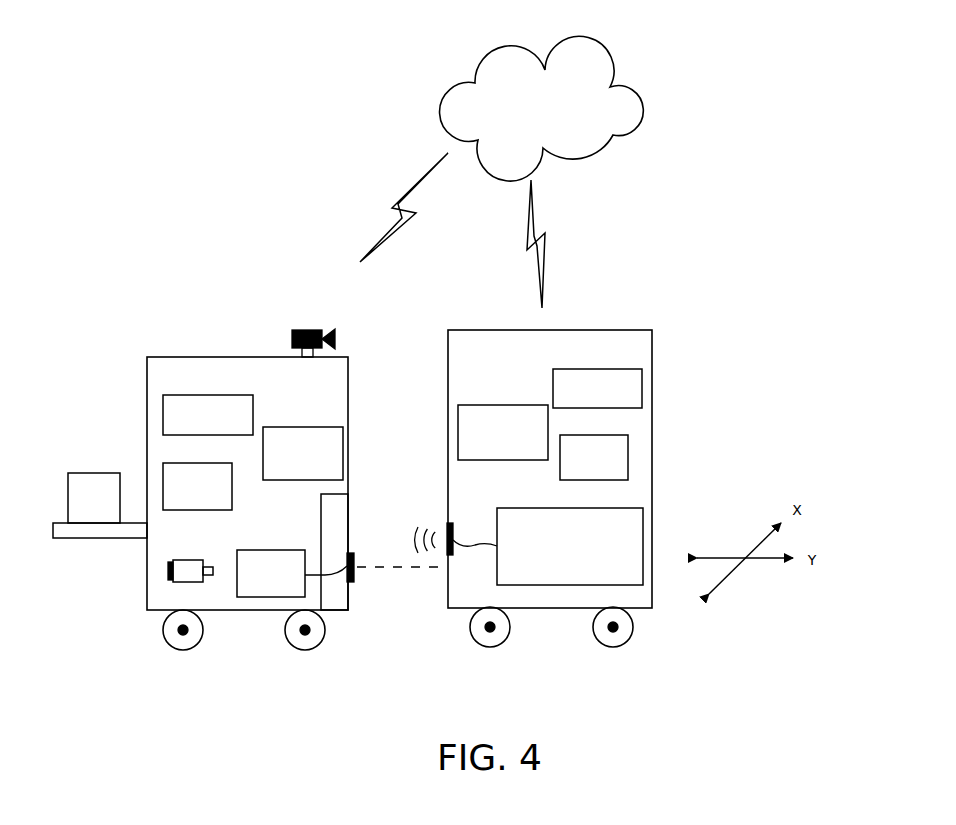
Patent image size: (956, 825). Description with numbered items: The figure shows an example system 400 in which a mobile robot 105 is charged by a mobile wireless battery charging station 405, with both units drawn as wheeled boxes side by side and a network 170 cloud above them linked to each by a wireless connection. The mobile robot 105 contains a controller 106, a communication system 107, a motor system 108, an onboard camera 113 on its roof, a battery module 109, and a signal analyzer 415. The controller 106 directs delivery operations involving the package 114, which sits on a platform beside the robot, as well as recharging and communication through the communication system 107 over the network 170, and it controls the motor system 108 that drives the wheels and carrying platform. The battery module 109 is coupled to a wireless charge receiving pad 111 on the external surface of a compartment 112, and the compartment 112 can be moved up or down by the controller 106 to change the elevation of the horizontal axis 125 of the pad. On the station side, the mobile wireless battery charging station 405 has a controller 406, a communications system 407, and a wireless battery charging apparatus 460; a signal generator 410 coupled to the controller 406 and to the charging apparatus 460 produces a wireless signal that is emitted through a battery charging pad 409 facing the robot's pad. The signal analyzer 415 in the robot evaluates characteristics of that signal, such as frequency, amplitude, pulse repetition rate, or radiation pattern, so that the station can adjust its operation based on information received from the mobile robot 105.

The system 400 is at (748, 663).
The mobile robot 105 is at (132, 330).
The controller 106 is at (202, 395).
The communication system 107 is at (200, 463).
The motor system 108 is at (180, 558).
The battery module 109 is at (280, 550).
The wireless charge receiving pad 111 is at (349, 553).
The compartment 112 is at (320, 527).
The onboard camera 113 is at (304, 328).
The package 114 is at (100, 505).
The horizontal axis 125 is at (378, 570).
The network 170 is at (542, 108).
The mobile wireless battery charging station 405 is at (667, 333).
The controller 406 is at (603, 368).
The communications system 407 is at (582, 435).
The battery charging pad 409 is at (448, 525).
The signal generator 410 is at (508, 404).
The signal analyzer 415 is at (293, 427).
The wireless battery charging apparatus 460 is at (547, 508).